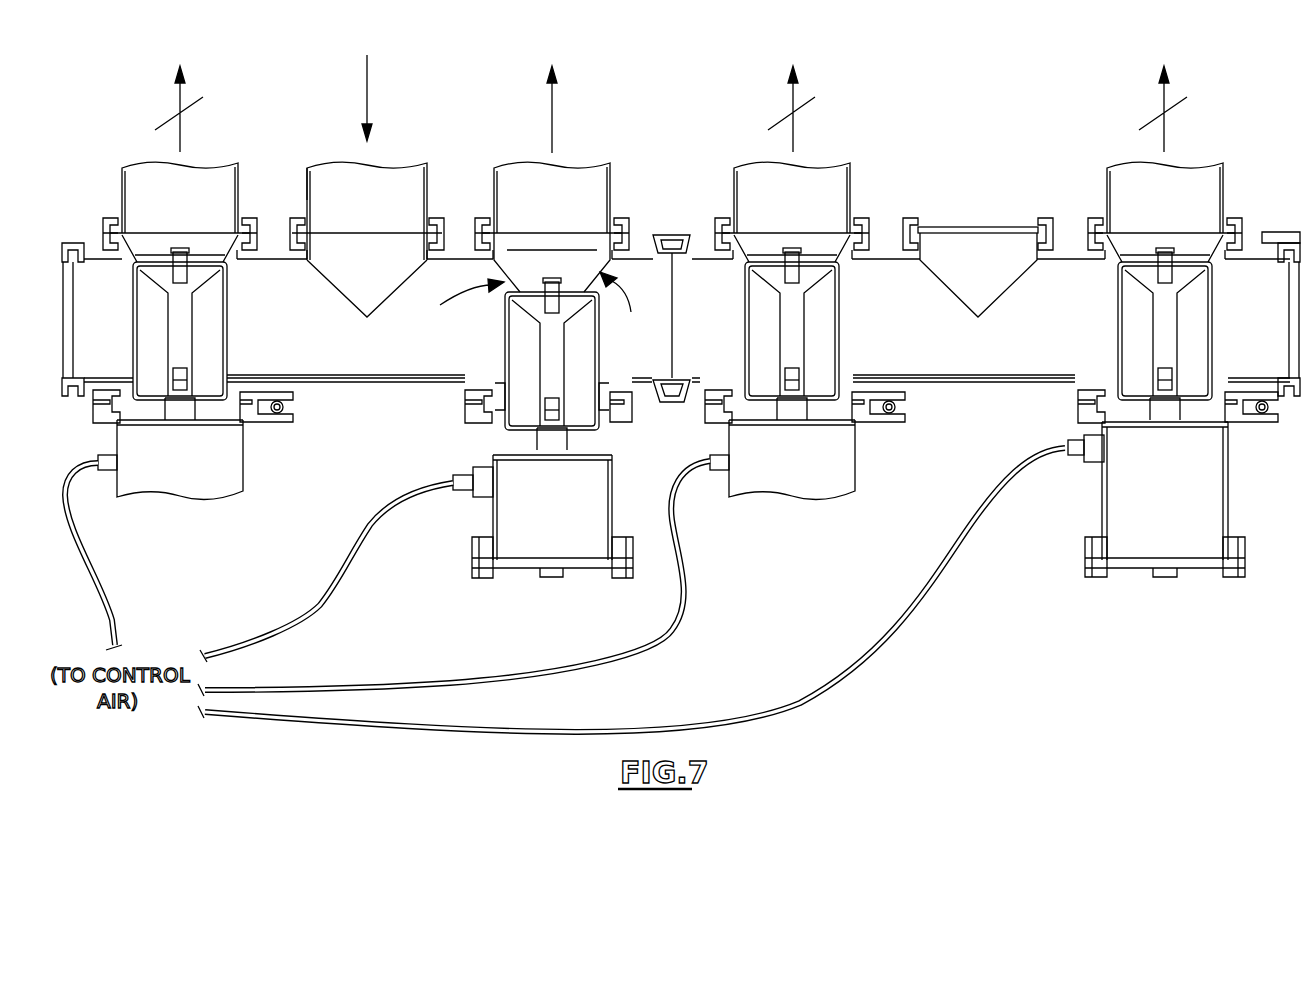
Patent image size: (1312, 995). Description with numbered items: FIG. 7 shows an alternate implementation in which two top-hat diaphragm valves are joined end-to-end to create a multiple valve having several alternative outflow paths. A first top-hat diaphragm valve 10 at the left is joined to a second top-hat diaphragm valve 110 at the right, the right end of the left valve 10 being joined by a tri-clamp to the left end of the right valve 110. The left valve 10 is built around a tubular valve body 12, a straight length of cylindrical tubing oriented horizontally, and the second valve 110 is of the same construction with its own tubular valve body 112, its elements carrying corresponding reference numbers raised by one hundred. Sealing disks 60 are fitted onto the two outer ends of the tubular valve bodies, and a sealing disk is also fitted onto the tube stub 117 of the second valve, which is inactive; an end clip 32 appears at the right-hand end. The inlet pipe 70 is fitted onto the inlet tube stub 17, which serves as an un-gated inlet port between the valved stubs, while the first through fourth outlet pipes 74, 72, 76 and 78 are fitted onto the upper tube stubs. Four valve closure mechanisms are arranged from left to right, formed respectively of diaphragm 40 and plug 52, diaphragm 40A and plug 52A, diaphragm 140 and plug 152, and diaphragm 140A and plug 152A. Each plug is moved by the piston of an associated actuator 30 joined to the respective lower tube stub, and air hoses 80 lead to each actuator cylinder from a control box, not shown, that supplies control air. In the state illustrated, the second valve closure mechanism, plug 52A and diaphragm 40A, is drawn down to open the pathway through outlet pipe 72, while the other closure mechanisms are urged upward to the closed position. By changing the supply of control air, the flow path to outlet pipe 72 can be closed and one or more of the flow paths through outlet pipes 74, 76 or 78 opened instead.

The top-hat diaphragm valve 10 is at (372, 398).
The tubular valve body 12 is at (308, 388).
The third upper tube stub 17 is at (375, 255).
The actuator 30 is at (208, 500).
The end clip 32 is at (1286, 238).
The diaphragm 40 is at (226, 312).
The diaphragm 40A is at (508, 337).
The plug 52 is at (192, 340).
The plug 52A is at (546, 361).
The sealing disk 60 is at (64, 308).
The inlet pipe 70 is at (306, 182).
The outlet pipe 72 is at (614, 190).
The outlet pipe 74 is at (122, 196).
The outlet pipe 76 is at (719, 183).
The outlet pipe 78 is at (1227, 196).
The air hose 80 is at (110, 590).
The second top-hat diaphragm valve 110 is at (959, 405).
The tubular valve body 112 is at (1015, 388).
The tube stub 117 is at (986, 260).
The diaphragm 140 is at (840, 312).
The diaphragm 140A is at (1120, 322).
The plug 152 is at (805, 355).
The plug 152A is at (1155, 357).